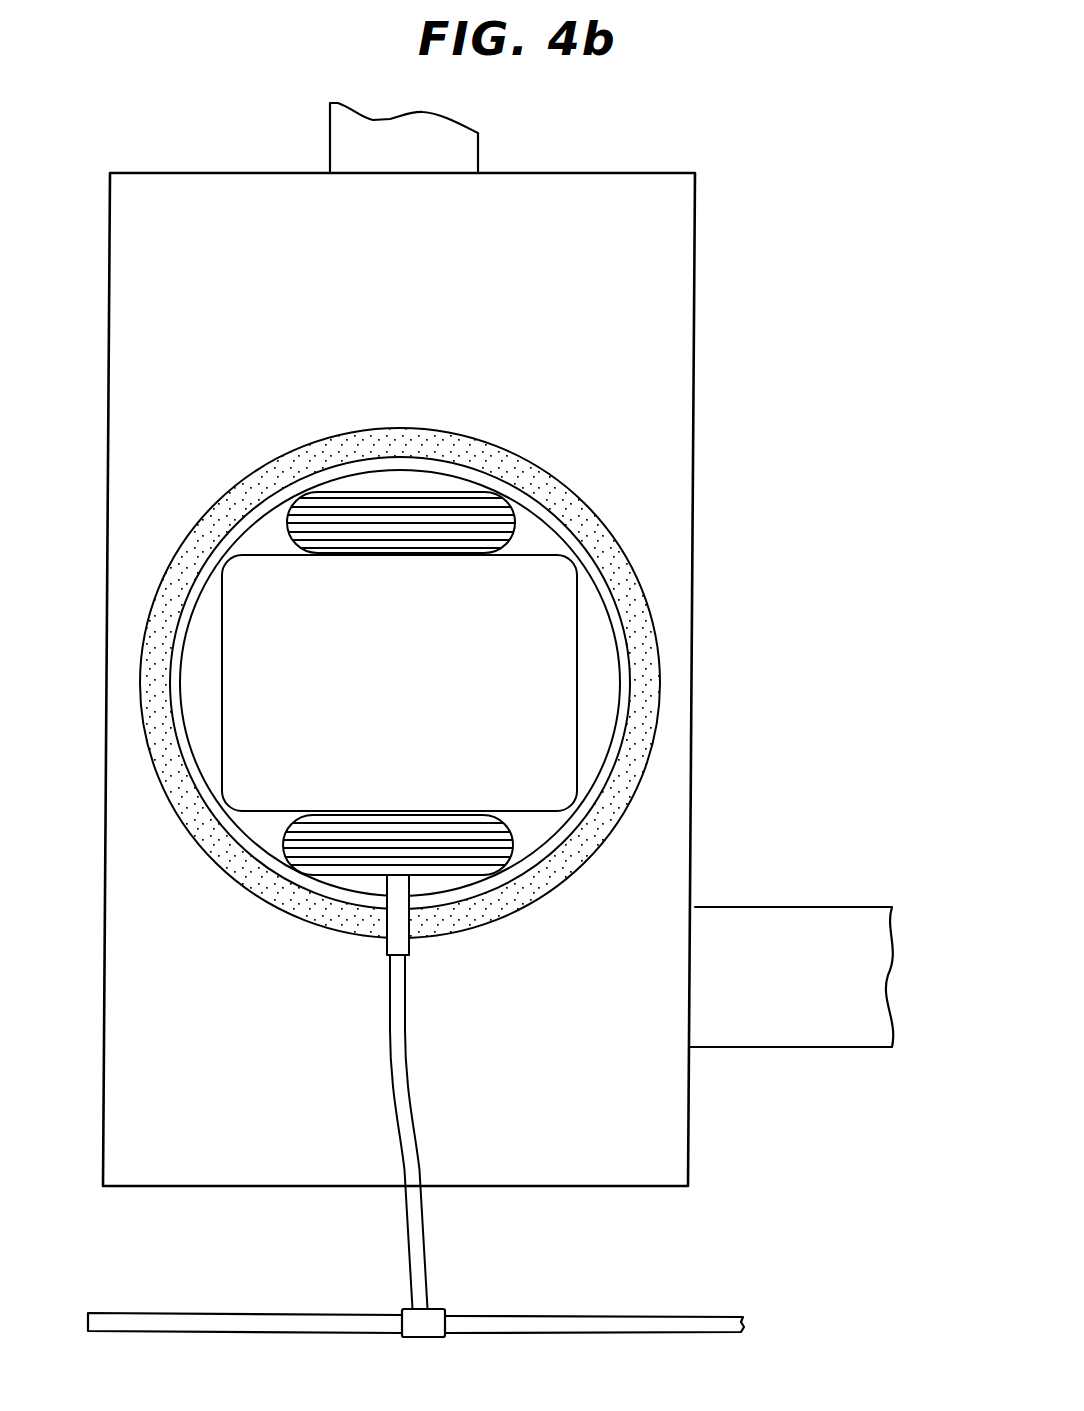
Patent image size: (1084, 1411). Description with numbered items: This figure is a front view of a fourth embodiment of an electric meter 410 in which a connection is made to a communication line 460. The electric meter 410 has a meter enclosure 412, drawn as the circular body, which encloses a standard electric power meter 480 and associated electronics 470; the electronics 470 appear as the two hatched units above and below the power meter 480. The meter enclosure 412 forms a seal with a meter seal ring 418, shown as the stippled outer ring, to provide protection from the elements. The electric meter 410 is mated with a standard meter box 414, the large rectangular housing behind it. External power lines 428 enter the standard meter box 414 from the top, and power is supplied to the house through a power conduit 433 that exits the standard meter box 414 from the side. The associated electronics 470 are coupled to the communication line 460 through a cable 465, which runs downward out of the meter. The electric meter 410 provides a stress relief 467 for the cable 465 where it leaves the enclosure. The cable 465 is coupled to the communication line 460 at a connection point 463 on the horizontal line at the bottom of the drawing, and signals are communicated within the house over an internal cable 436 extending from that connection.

The electric meter 410 is at (373, 483).
The meter enclosure 412 is at (223, 823).
The standard meter box 414 is at (693, 445).
The meter seal ring 418 is at (318, 455).
The external power lines 428 is at (345, 138).
The power conduit 433 is at (802, 1033).
The internal cable 436 is at (168, 1318).
The communication line 460 is at (685, 1322).
The connection point 463 is at (433, 1322).
The cable 465 is at (410, 1089).
The stress relief 467 is at (397, 925).
The associated electronics 470 is at (417, 535).
The standard electric power meter 480 is at (243, 727).